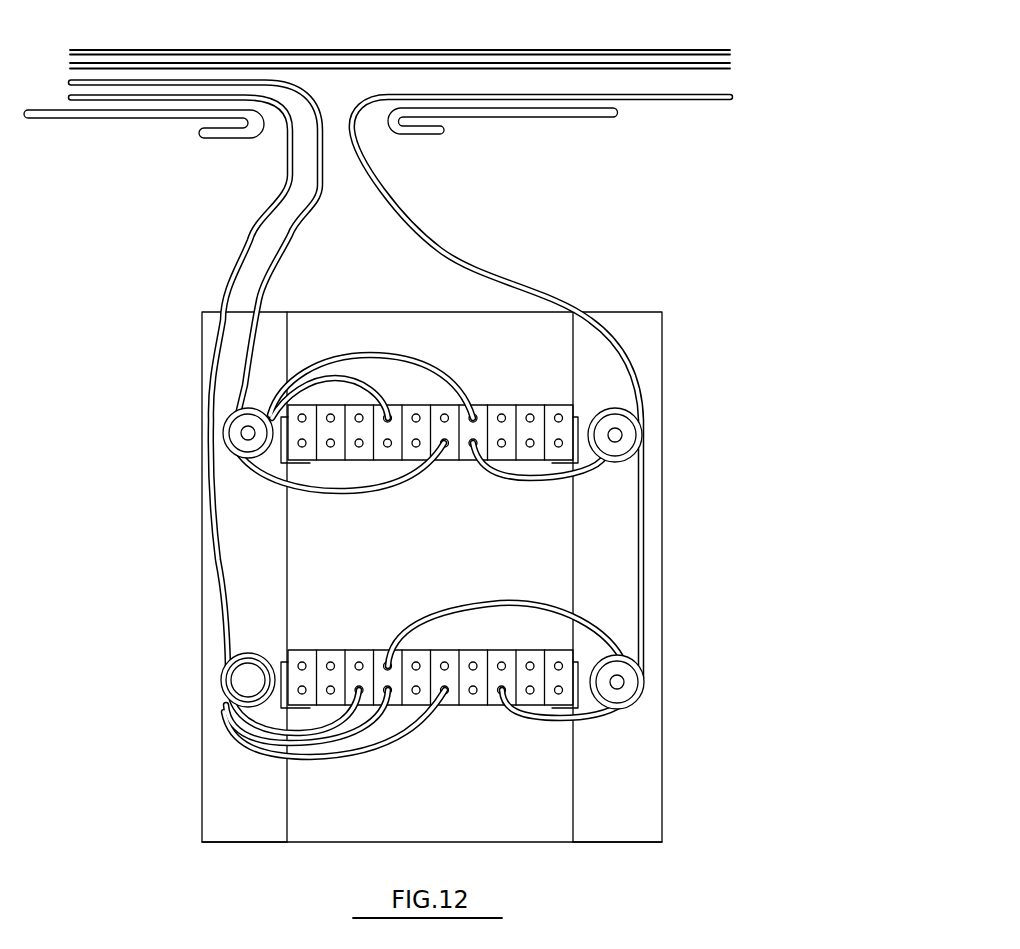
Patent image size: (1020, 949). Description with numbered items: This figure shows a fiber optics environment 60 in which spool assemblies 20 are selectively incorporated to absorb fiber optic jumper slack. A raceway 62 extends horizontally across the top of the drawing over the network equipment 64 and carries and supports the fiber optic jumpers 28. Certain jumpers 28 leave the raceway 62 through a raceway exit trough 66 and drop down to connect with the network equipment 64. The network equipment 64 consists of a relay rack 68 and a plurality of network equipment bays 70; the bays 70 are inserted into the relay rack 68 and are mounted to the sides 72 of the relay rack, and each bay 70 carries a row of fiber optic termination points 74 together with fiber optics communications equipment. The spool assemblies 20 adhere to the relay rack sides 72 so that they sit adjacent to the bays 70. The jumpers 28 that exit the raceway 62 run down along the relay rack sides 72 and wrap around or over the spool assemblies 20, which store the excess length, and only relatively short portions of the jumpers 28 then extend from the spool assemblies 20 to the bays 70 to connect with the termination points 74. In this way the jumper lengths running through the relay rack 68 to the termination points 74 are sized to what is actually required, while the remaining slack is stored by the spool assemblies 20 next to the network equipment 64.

The spool assembly 20 is at (633, 433).
The fiber optic jumpers 28 is at (500, 48).
The fiber optics environment 60 is at (740, 165).
The raceway 62 is at (766, 50).
The network equipment 64 is at (684, 376).
The raceway exit trough 66 is at (417, 135).
The relay rack 68 is at (672, 549).
The network equipment bays 70 is at (453, 470).
The sides of the relay rack 72 is at (242, 843).
The fiber optic termination points 74 is at (531, 413).